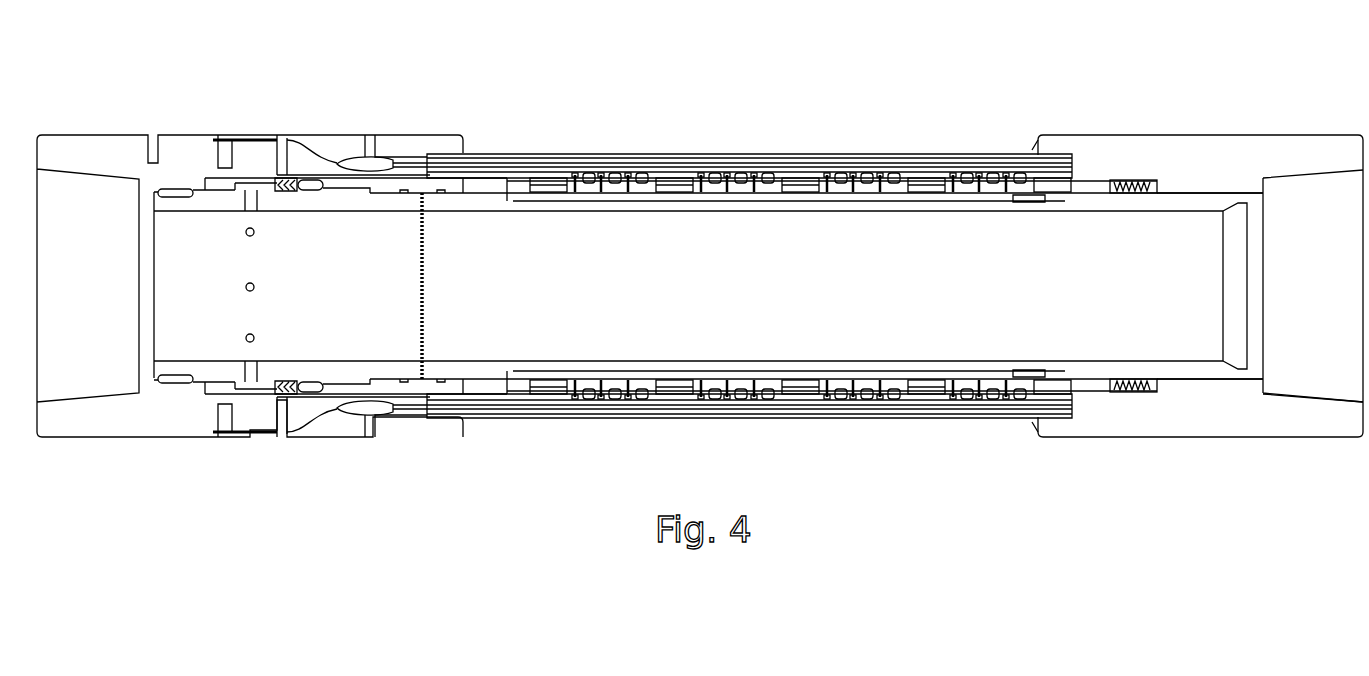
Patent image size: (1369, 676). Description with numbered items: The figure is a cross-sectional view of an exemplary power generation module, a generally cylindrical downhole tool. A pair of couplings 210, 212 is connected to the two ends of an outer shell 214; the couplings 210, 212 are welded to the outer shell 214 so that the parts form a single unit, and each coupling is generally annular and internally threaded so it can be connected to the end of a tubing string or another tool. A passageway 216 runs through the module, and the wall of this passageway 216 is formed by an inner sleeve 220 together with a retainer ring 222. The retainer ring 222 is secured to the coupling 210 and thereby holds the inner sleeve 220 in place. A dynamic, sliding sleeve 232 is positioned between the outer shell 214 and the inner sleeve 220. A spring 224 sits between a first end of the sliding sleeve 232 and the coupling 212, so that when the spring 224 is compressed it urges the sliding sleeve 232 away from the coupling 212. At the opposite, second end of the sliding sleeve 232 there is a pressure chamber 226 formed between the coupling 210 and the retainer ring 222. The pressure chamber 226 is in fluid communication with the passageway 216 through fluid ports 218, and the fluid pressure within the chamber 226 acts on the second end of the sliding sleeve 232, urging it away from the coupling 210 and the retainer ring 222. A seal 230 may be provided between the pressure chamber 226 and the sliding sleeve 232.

The coupling 210 is at (148, 439).
The coupling 212 is at (1180, 439).
The outer shell 214 is at (883, 418).
The passageway 216 is at (750, 290).
The fluid ports 218 is at (246, 337).
The inner sleeve 220 is at (500, 212).
The retainer ring 222 is at (379, 213).
The spring 224 is at (1143, 180).
The pressure chamber 226 is at (277, 191).
The seal 230 is at (322, 192).
The sliding sleeve 232 is at (465, 194).